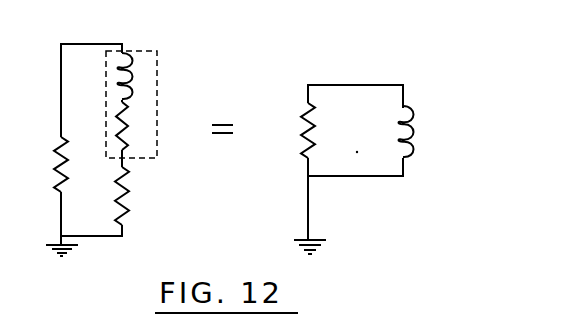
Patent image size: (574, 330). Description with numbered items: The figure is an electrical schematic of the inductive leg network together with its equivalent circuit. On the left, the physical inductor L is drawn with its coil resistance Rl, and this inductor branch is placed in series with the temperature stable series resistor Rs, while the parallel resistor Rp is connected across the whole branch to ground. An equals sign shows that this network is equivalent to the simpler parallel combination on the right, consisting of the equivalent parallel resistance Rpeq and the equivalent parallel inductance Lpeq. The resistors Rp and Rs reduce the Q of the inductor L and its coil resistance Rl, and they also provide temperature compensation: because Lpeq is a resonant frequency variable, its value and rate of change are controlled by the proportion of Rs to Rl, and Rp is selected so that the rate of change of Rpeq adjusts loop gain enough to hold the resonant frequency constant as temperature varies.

The parallel resistor Rp is at (75, 164).
The physical inductor L is at (131, 76).
The coil resistance Rl is at (132, 126).
The series resistor Rs is at (134, 196).
The equivalent parallel resistance Rpeq is at (339, 130).
The equivalent parallel inductance Lpeq is at (437, 131).